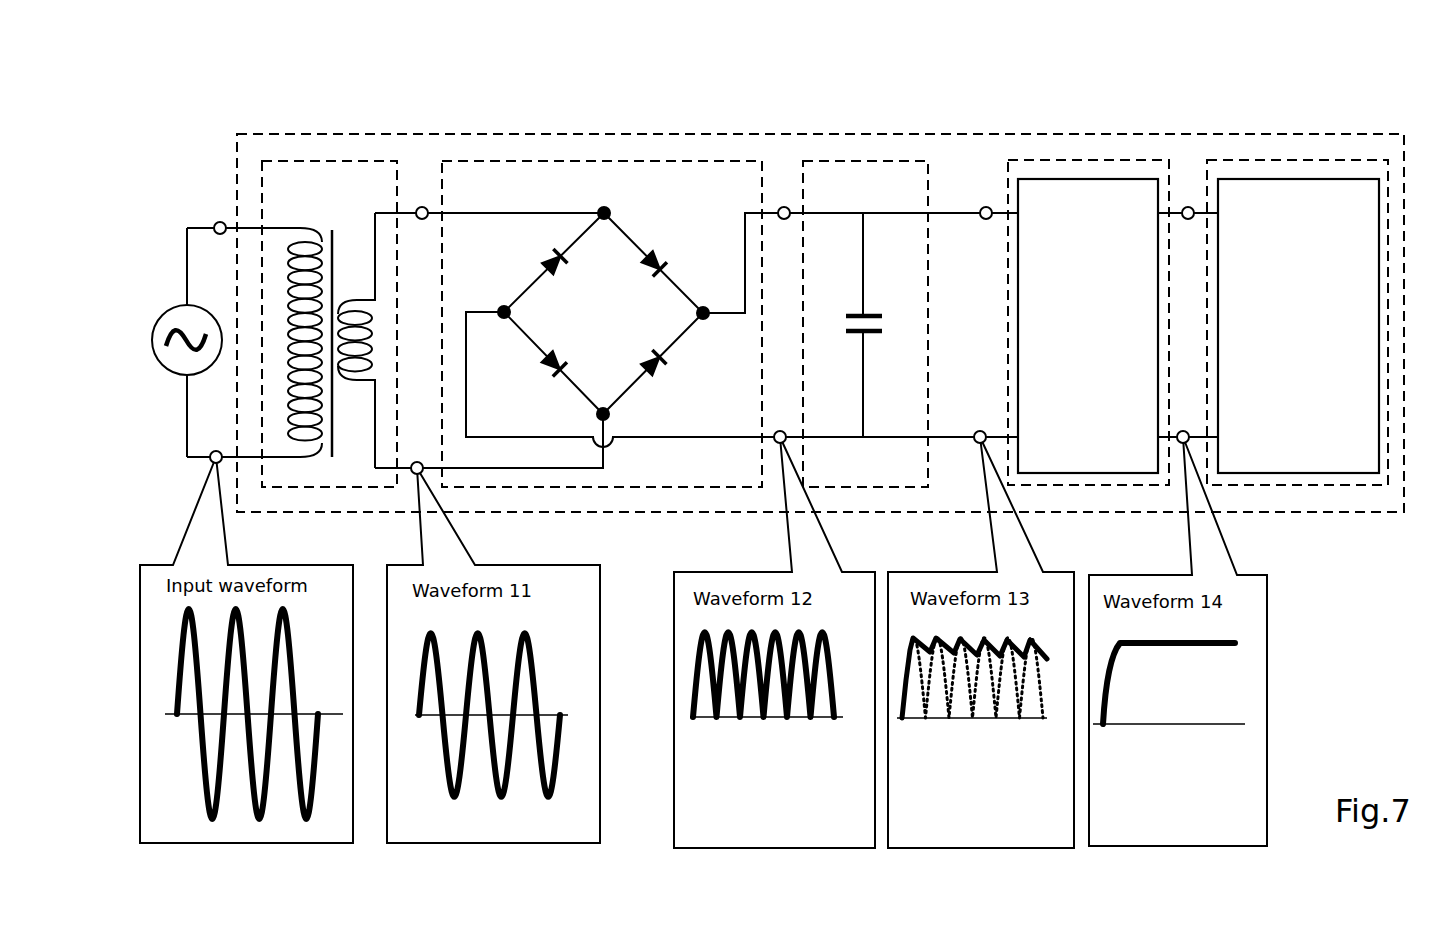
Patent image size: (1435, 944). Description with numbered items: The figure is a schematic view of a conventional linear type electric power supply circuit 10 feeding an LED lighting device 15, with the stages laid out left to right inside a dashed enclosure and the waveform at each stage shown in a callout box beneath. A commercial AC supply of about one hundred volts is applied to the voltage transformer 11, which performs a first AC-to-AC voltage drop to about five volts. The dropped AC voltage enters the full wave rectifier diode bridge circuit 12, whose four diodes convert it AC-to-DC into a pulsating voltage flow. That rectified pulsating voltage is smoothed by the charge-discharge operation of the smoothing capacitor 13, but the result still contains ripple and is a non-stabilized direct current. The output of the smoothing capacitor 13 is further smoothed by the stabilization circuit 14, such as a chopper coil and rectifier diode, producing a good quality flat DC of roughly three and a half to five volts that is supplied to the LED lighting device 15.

The linear type electric power supply circuit 10 is at (258, 132).
The voltage transformer 11 is at (318, 160).
The full wave rectifier diode bridge circuit 12 is at (615, 160).
The smoothing capacitor 13 is at (868, 160).
The stabilization circuit 14 is at (1093, 160).
The LED lighting device 15 is at (1294, 160).